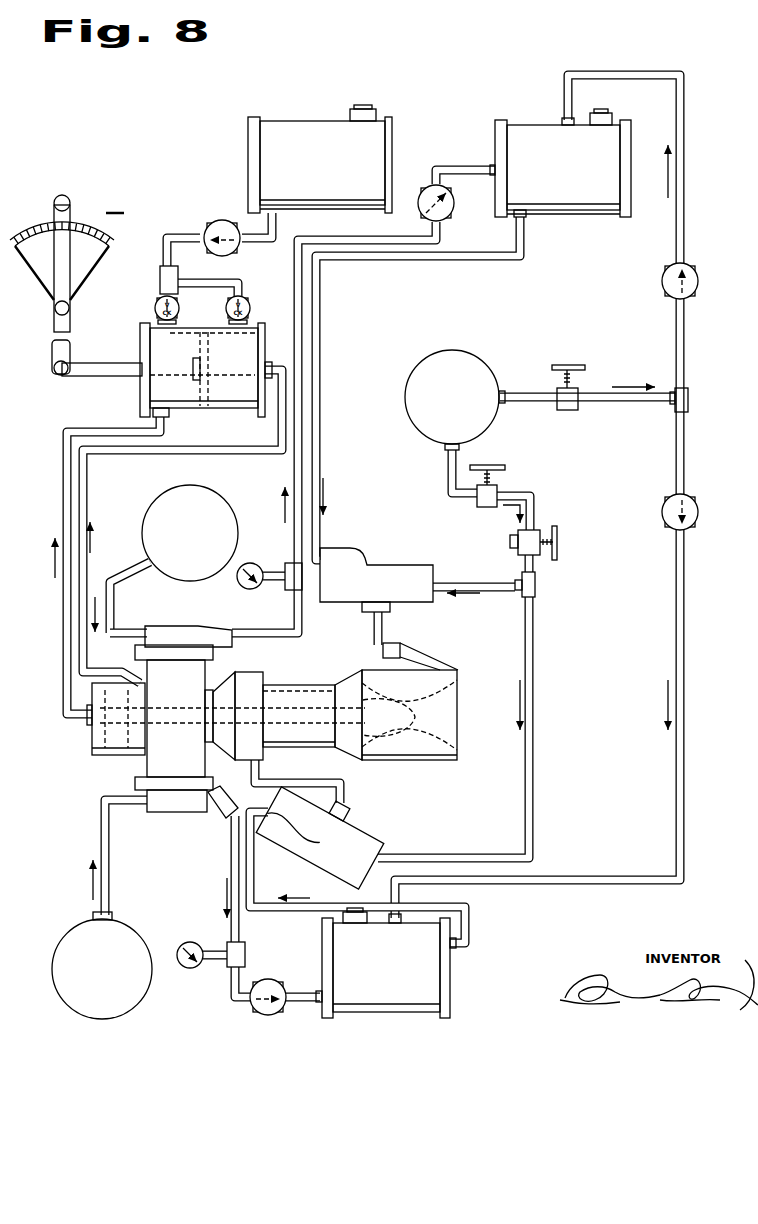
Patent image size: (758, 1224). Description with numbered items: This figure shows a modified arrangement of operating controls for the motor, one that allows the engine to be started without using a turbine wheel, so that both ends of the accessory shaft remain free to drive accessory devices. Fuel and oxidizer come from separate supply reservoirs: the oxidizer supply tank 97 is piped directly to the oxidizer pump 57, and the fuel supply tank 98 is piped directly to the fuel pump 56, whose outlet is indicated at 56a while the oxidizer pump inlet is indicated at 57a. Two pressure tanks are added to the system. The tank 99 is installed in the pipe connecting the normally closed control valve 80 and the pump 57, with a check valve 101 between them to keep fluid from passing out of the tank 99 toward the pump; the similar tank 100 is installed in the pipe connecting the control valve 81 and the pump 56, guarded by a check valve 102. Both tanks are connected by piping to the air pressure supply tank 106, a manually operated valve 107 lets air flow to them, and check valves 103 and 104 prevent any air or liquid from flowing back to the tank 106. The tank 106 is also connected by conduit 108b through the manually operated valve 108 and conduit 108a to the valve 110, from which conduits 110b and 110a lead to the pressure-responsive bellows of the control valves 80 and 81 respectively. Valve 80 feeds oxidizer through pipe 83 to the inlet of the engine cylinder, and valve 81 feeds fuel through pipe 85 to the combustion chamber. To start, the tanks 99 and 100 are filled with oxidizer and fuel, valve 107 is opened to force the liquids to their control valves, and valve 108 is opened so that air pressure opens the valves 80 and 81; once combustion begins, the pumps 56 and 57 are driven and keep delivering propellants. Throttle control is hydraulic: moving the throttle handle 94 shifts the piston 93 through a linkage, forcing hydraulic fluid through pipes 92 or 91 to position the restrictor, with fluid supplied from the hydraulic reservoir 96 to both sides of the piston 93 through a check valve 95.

The fuel pump 56 is at (166, 813).
The fuel pump outlet 56a is at (206, 815).
The oxidizer pump 57 is at (182, 627).
The oxidizer pump inlet 57a is at (154, 626).
The control valve 80 is at (403, 570).
The control valve 81 is at (366, 845).
The pipe 83 is at (384, 628).
The pipe 85 is at (352, 797).
The pipe 91 is at (218, 445).
The pipe 92 is at (87, 430).
The piston 93 is at (203, 333).
The throttle handle 94 is at (68, 278).
The check valve 95 is at (222, 221).
The hydraulic fluid reservoir 96 is at (311, 108).
The oxidizer supply reservoir 97 is at (160, 497).
The fuel supply reservoir 98 is at (138, 952).
The pressure tank 99 is at (516, 130).
The pressure tank 100 is at (374, 1004).
The check valve 101 is at (418, 188).
The check valve 102 is at (250, 1004).
The check valve 103 is at (699, 279).
The check valve 104 is at (697, 515).
The air pressure supply tank 106 is at (447, 352).
The manually operated valve 107 is at (566, 412).
The manually operated valve 108 is at (484, 510).
The conduit 108a is at (535, 506).
The conduit 108b is at (450, 479).
The valve 110 is at (558, 543).
The conduit 110a is at (534, 682).
The conduit 110b is at (507, 590).